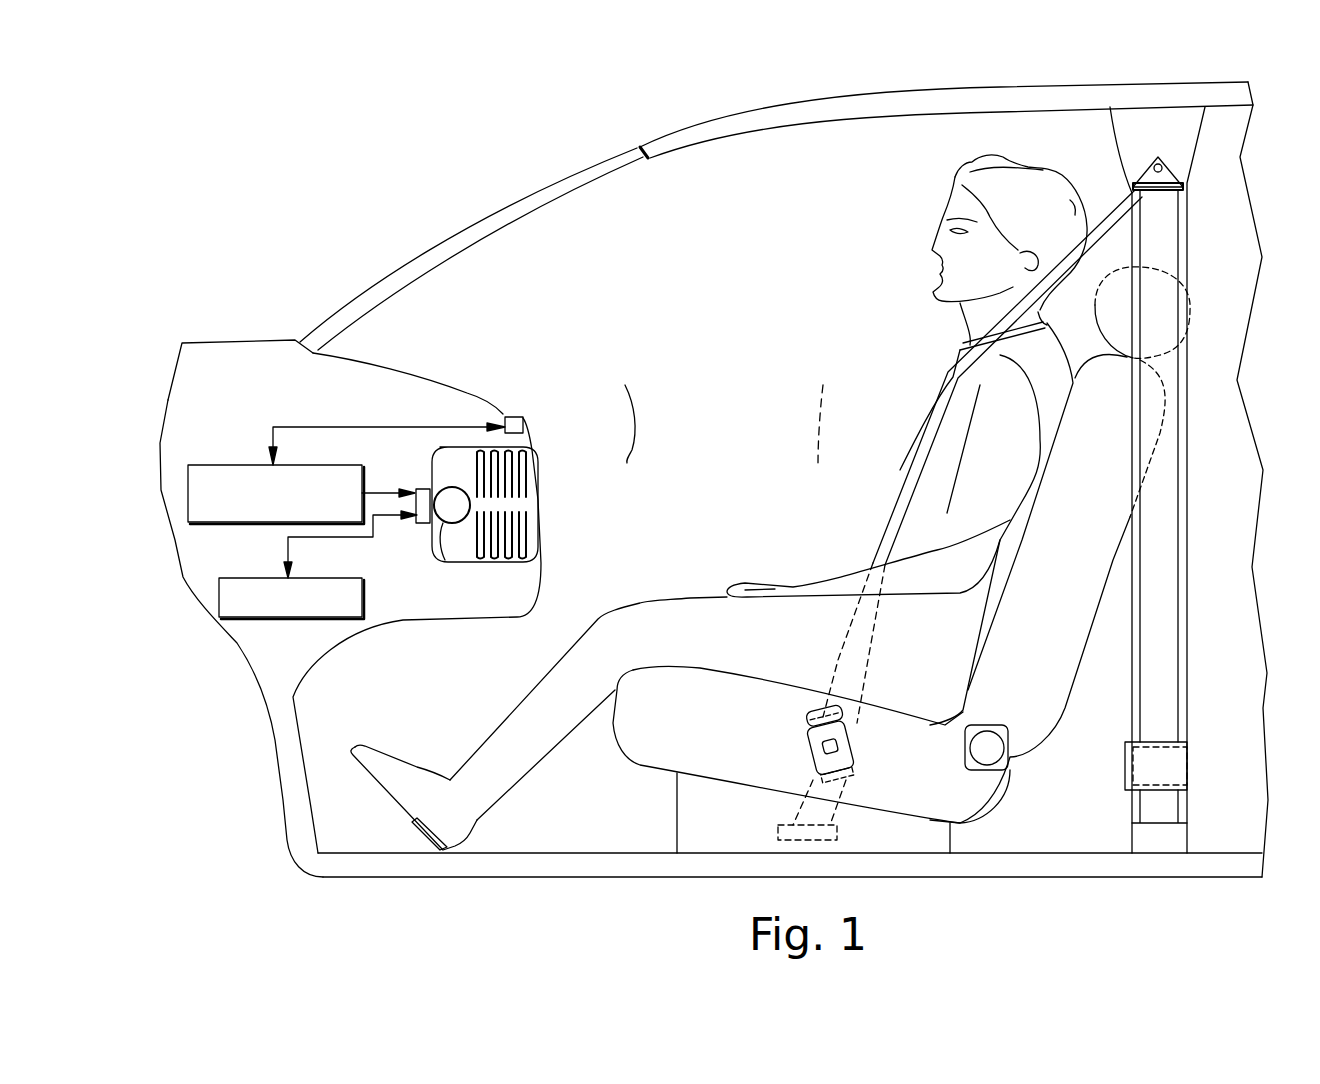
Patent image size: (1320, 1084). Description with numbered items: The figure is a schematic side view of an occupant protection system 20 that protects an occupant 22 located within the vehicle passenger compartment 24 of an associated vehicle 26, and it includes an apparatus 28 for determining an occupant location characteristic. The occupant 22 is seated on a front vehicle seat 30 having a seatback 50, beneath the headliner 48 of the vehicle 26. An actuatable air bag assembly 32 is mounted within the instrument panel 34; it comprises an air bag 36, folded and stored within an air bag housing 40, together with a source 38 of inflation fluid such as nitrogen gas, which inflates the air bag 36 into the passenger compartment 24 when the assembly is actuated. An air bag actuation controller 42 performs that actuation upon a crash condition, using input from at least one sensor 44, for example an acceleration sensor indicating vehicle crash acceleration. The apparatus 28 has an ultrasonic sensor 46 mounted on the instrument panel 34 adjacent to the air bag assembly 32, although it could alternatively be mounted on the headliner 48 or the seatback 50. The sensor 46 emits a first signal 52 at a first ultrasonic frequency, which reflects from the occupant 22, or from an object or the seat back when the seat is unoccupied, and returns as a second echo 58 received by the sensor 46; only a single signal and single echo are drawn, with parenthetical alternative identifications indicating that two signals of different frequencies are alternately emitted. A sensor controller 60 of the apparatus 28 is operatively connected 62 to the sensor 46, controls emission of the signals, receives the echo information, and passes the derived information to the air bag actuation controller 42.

The occupant protection system 20 is at (411, 448).
The occupant 22 is at (931, 208).
The vehicle passenger compartment 24 is at (714, 511).
The vehicle 26 is at (1063, 858).
The apparatus 28 is at (349, 587).
The front vehicle seat 30 is at (949, 560).
The air bag assembly 32 is at (486, 553).
The instrument panel 34 is at (478, 384).
The air bag 36 is at (472, 547).
The source of inflation fluid 38 is at (445, 524).
The air bag housing 40 is at (412, 463).
The air bag actuation controller 42 is at (423, 522).
The sensor 44 is at (265, 580).
The sensor 46 is at (516, 417).
The headliner 48 is at (767, 120).
The seatback 50 is at (1087, 547).
The first signal 52 is at (627, 463).
The second echo 58 is at (818, 463).
The sensor controller 60 is at (218, 473).
The operative connection 62 is at (348, 426).